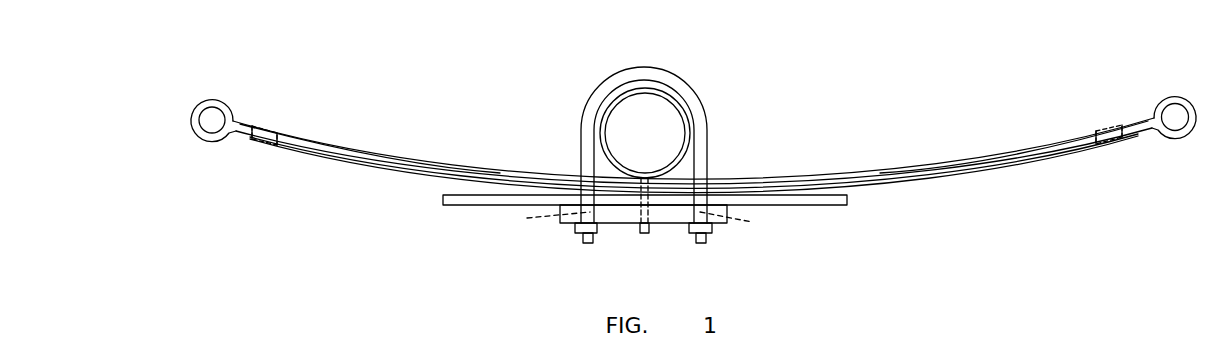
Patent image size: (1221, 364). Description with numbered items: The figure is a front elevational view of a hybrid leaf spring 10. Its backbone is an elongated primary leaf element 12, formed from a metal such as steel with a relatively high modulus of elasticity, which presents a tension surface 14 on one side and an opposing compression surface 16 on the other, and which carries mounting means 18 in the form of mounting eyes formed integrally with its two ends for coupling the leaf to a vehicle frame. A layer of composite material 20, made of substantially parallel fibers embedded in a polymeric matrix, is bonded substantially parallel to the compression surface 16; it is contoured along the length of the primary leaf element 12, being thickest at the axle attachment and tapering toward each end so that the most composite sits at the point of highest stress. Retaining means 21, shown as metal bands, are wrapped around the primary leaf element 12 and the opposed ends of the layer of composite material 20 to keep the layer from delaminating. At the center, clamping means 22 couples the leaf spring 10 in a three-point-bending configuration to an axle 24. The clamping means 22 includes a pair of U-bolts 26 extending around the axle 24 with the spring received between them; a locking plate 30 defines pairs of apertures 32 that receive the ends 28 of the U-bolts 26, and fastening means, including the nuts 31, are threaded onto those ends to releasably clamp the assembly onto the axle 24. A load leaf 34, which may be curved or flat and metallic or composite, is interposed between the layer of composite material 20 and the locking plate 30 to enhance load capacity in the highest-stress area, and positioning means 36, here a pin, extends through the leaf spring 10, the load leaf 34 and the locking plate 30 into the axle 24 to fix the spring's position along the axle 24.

The hybrid leaf spring 10 is at (456, 80).
The elongated primary leaf element 12 is at (852, 173).
The tension surface 14 is at (368, 156).
The compression surface 16 is at (937, 171).
The mounting means 18 is at (219, 101).
The layer of composite material 20 is at (392, 173).
The retaining means 21 is at (276, 131).
The clamping means 22 is at (621, 56).
The axle 24 is at (670, 92).
The U-bolts 26 is at (581, 118).
The ends of the U-bolts 28 is at (590, 243).
The locking plate 30 is at (616, 217).
The nut 31 is at (576, 229).
The apertures 32 is at (641, 223).
The load leaf 34 is at (468, 207).
The positioning means 36 is at (645, 233).